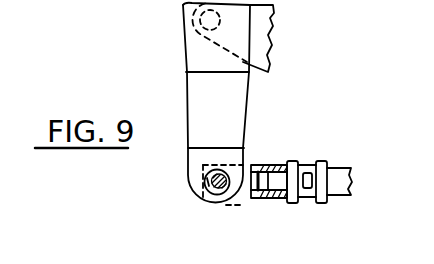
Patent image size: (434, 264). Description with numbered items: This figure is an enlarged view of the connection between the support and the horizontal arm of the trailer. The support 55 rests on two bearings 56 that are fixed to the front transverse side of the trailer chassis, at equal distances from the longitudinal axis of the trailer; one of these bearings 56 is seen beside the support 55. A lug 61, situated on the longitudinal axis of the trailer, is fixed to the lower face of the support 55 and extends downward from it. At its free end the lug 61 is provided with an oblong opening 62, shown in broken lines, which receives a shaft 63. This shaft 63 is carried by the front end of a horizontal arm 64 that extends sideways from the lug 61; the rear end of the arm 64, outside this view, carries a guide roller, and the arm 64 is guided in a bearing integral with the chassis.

The support 55 is at (195, 53).
The bearings 56 is at (267, 30).
The lug 61 is at (200, 111).
The oblong opening 62 is at (204, 182).
The shaft 63 is at (217, 193).
The horizontal arm 64 is at (307, 163).